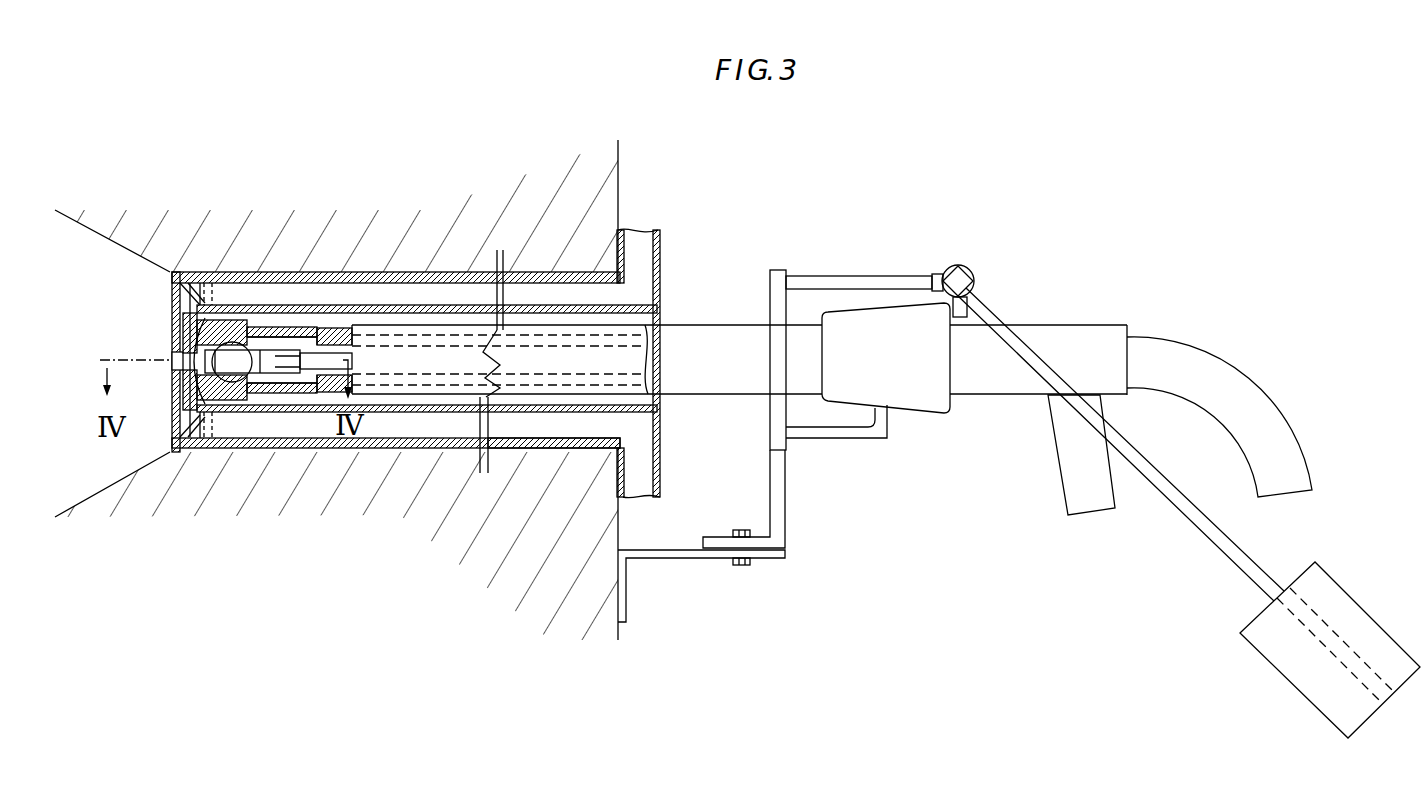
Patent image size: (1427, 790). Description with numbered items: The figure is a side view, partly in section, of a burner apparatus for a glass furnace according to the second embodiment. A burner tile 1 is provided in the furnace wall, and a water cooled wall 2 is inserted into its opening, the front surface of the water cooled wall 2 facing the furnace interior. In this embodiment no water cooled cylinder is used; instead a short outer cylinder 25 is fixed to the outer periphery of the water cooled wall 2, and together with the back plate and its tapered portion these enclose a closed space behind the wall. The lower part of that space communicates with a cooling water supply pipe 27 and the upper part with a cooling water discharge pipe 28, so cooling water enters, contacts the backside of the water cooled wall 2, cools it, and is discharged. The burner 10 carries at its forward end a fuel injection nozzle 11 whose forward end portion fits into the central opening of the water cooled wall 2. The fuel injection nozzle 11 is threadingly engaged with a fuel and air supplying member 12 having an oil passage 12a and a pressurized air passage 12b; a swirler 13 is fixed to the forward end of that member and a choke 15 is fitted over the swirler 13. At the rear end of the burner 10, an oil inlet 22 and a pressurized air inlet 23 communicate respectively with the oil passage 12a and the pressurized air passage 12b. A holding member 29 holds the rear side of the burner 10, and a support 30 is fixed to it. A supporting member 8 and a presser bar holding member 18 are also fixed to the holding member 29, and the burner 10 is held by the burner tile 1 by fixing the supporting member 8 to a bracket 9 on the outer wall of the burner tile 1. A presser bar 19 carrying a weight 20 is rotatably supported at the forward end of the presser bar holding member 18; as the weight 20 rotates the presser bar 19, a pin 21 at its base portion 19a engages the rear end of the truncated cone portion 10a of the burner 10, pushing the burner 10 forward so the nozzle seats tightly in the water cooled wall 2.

The burner tile 1 is at (590, 193).
The water cooled wall 2 is at (172, 312).
The supporting member 8 is at (778, 507).
The bracket 9 is at (676, 553).
The burner 10 is at (465, 335).
The truncated cone portion 10a is at (918, 400).
The fuel injection nozzle 11 is at (228, 320).
The fuel and air supplying member 12 is at (352, 332).
The oil passage 12a is at (292, 335).
The pressurized air passage 12b is at (365, 345).
The swirler 13 is at (248, 335).
The choke 15 is at (213, 400).
The presser bar holding member 18 is at (873, 283).
The presser bar 19 is at (1180, 505).
The base portion 19a is at (967, 262).
The weight 20 is at (1358, 605).
The pin 21 is at (970, 302).
The oil inlet 22 is at (1290, 493).
The pressurized air inlet 23 is at (1101, 520).
The outer cylinder 25 is at (183, 272).
The cooling water supply pipe 27 is at (514, 448).
The cooling water discharge pipe 28 is at (457, 345).
The holding member 29 is at (775, 423).
The support 30 is at (841, 433).